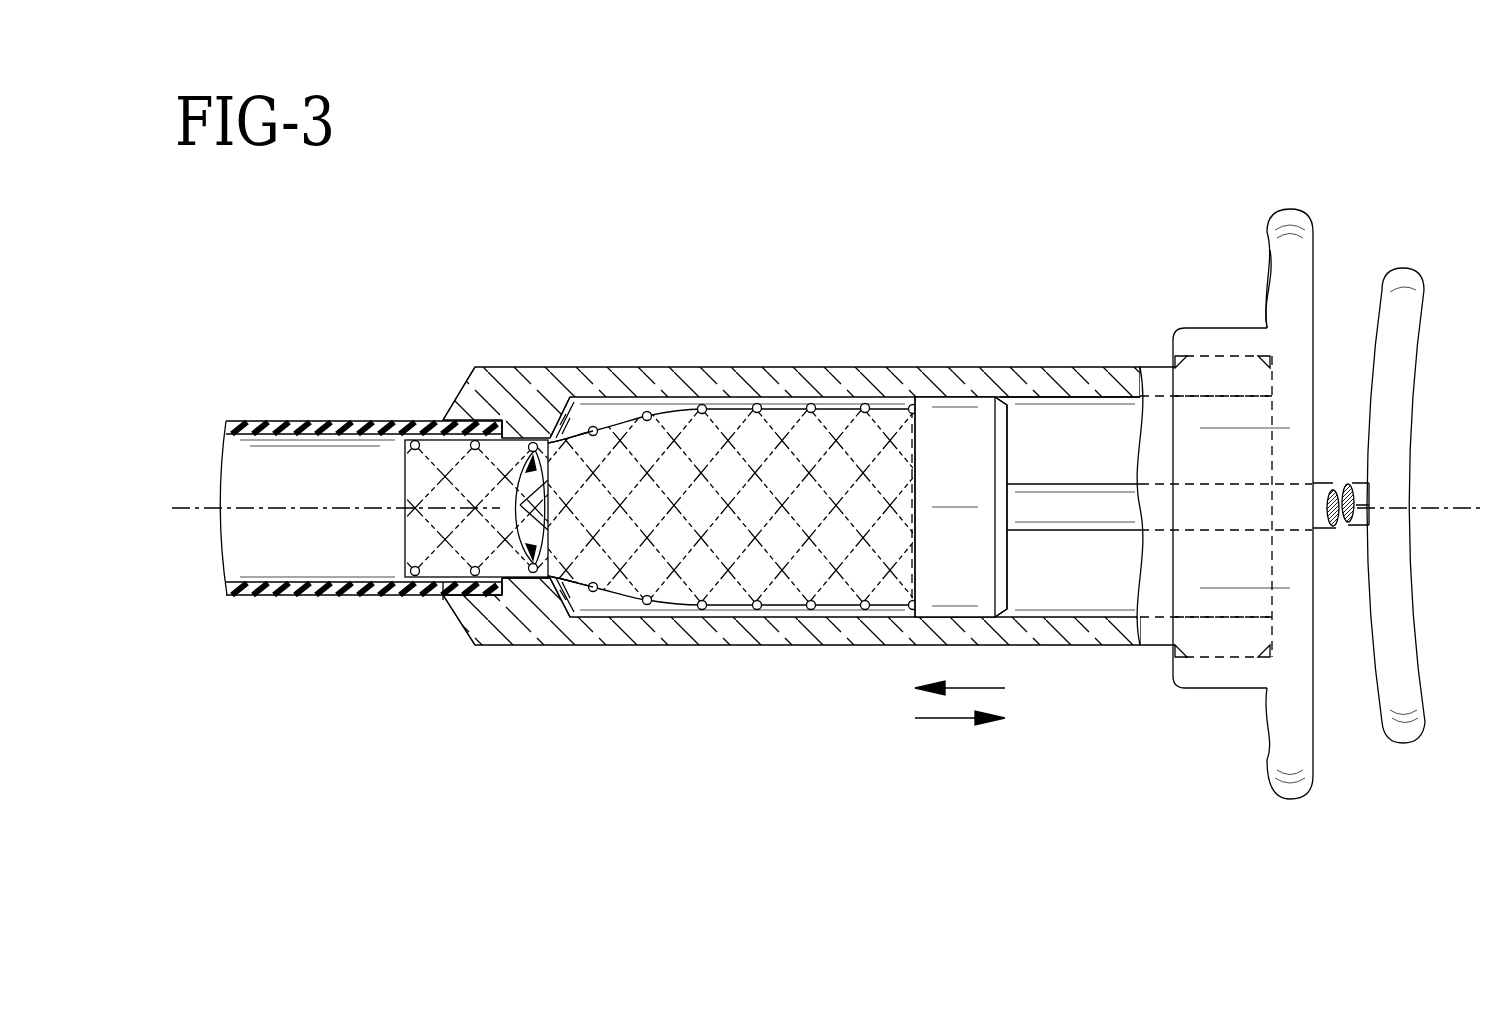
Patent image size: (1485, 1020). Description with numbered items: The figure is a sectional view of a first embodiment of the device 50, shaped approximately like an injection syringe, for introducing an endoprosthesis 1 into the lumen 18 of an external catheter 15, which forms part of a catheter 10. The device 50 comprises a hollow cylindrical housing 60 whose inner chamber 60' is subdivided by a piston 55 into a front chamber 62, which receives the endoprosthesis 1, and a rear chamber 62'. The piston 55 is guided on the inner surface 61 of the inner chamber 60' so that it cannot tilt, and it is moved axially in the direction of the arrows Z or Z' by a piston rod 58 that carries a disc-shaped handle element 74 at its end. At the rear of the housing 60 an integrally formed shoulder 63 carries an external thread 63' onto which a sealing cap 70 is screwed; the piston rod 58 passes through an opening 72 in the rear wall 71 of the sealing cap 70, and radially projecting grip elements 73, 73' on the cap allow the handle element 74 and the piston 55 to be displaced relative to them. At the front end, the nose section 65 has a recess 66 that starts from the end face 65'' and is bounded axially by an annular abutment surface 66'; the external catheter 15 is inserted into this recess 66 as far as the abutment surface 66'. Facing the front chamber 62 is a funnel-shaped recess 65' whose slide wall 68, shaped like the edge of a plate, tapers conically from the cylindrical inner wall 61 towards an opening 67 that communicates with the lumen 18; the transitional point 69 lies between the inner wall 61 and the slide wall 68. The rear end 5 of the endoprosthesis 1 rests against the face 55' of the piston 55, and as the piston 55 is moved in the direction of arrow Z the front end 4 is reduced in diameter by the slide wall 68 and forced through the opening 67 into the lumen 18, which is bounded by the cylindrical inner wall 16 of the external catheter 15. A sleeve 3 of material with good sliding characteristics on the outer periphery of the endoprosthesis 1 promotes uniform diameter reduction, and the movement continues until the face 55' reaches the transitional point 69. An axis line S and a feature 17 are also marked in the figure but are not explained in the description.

The endoprosthesis 1 is at (726, 399).
The sleeve 3 is at (405, 575).
The front end 4 is at (410, 472).
The rear end 5 is at (960, 565).
The catheter 10 is at (236, 392).
The external catheter 15 is at (310, 396).
The cylindrical inner wall 16 is at (262, 572).
The bore surface 17 is at (515, 598).
The lumen 18 is at (347, 456).
The device 50 is at (1040, 208).
The piston 55 is at (1032, 611).
The face 55' is at (895, 441).
The piston rod 58 is at (1103, 532).
The housing 60 is at (793, 420).
The inner chamber 60' is at (1154, 449).
The inner surface 61 is at (1088, 400).
The front chamber 62 is at (742, 431).
The rear chamber 62' is at (1105, 389).
The shoulder 63 is at (1223, 441).
The external thread 63' is at (1223, 391).
The nose section 65 is at (377, 680).
The recess 65' is at (670, 612).
The end face 65'' is at (347, 645).
The recess 66 is at (456, 574).
The annular abutment surface 66' is at (464, 337).
The opening 67 is at (515, 452).
The slide wall 68 is at (572, 418).
The transitional point 69 is at (587, 600).
The sealing cap 70 is at (1196, 716).
The rear wall 71 is at (1282, 383).
The opening 72 is at (1281, 540).
The grip element 73 is at (1303, 448).
The grip element 73' is at (1337, 809).
The handle element 74 is at (1402, 280).
The longitudinal axis S is at (180, 505).
The arrow Z is at (989, 676).
The arrow Z' is at (960, 758).